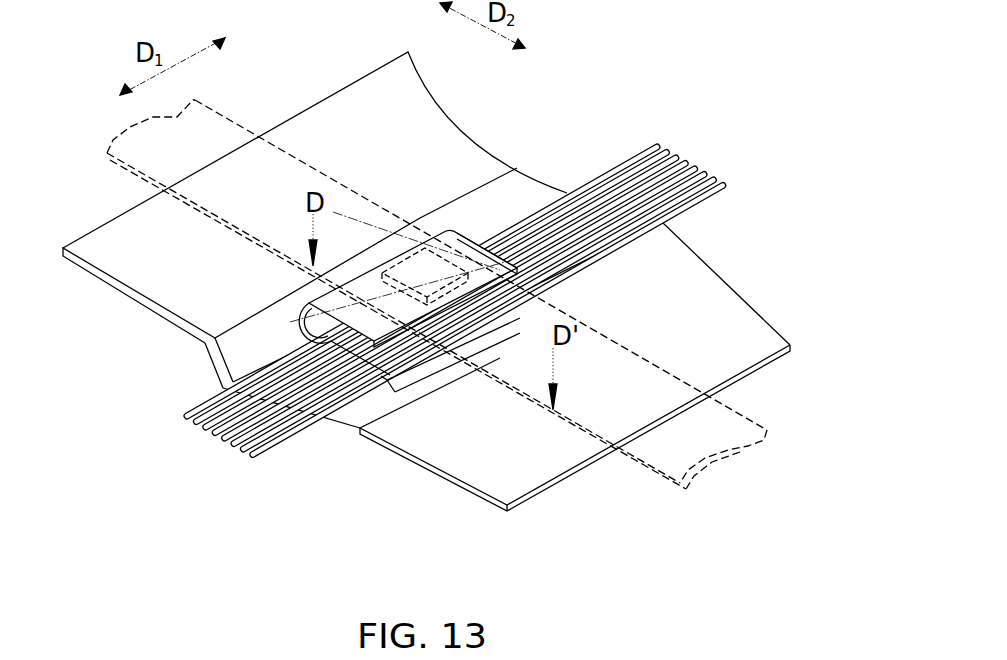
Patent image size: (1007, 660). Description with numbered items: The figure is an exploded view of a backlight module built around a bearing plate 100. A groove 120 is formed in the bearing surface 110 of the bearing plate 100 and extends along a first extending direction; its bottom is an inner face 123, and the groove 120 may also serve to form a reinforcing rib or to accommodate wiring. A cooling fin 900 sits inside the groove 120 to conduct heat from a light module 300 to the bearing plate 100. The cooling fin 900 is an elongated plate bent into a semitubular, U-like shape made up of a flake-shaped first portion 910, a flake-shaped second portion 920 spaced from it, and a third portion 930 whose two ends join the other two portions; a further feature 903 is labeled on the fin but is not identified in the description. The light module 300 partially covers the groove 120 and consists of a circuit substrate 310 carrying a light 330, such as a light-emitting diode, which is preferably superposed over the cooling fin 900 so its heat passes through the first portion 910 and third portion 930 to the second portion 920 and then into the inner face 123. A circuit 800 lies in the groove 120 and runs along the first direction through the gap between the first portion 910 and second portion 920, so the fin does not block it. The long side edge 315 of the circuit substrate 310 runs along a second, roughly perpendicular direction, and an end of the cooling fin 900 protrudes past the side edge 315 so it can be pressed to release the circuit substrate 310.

The bearing plate 100 is at (478, 497).
The bearing surface 110 is at (526, 462).
The groove 120 is at (510, 204).
The inner face 123 is at (664, 230).
The light module 300 is at (818, 256).
The circuit substrate 310 is at (587, 347).
The side edge 315 is at (147, 178).
The light 330 is at (480, 265).
The circuit 800 is at (662, 148).
The cooling fin 900 is at (163, 513).
The top surface of clip 903 is at (454, 238).
The first portion 910 is at (367, 313).
The second portion 920 is at (392, 398).
The third portion 930 is at (304, 318).